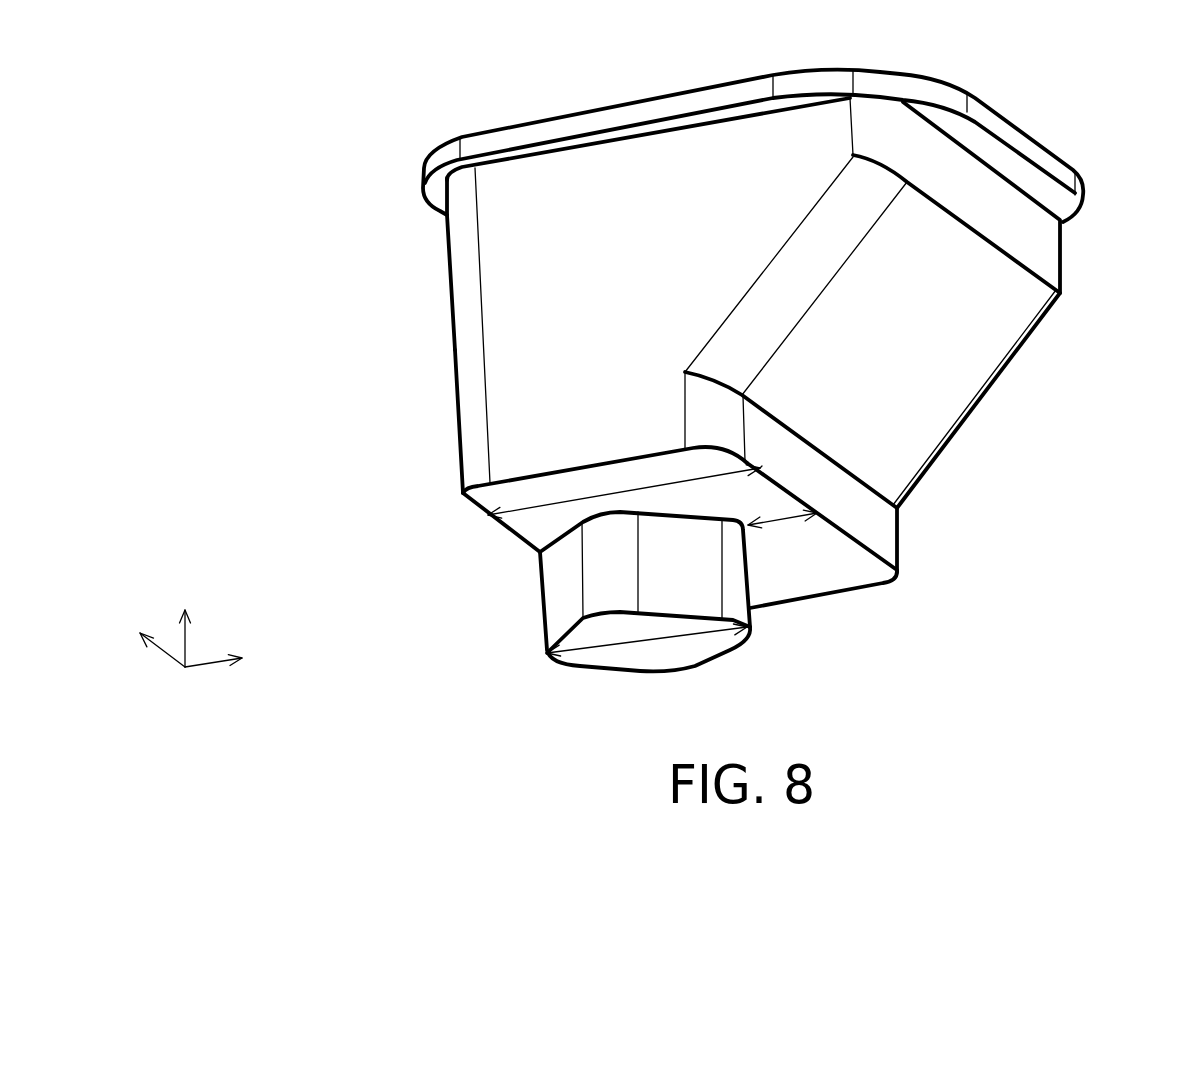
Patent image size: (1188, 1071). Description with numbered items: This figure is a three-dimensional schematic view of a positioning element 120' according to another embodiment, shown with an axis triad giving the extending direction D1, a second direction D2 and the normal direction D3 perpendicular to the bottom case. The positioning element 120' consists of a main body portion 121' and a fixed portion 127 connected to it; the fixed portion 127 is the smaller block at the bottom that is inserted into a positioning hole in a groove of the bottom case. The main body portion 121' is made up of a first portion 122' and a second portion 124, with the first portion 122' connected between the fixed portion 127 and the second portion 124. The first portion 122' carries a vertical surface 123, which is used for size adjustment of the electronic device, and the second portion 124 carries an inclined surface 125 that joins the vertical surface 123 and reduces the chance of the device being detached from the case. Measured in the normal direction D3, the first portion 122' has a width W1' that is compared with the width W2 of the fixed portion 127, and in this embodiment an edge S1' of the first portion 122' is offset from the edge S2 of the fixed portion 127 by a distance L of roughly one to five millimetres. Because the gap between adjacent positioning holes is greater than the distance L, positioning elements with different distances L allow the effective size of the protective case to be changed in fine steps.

The positioning element 120' is at (805, 396).
The main body portion 121' is at (589, 325).
The second portion 124 is at (565, 232).
The first portion 122' is at (567, 451).
The inclined surface 125 is at (937, 365).
The vertical surface 123 is at (795, 468).
The edge of the first portion S1' is at (969, 559).
The edge of the fixed portion S2 is at (735, 517).
The fixed portion 127 is at (560, 592).
The width of the first portion W1' is at (624, 490).
The width of the fixed portion W2 is at (647, 649).
The distance L is at (782, 534).
The extending direction D1 is at (229, 650).
The second direction D2 is at (148, 633).
The normal direction D3 is at (181, 620).